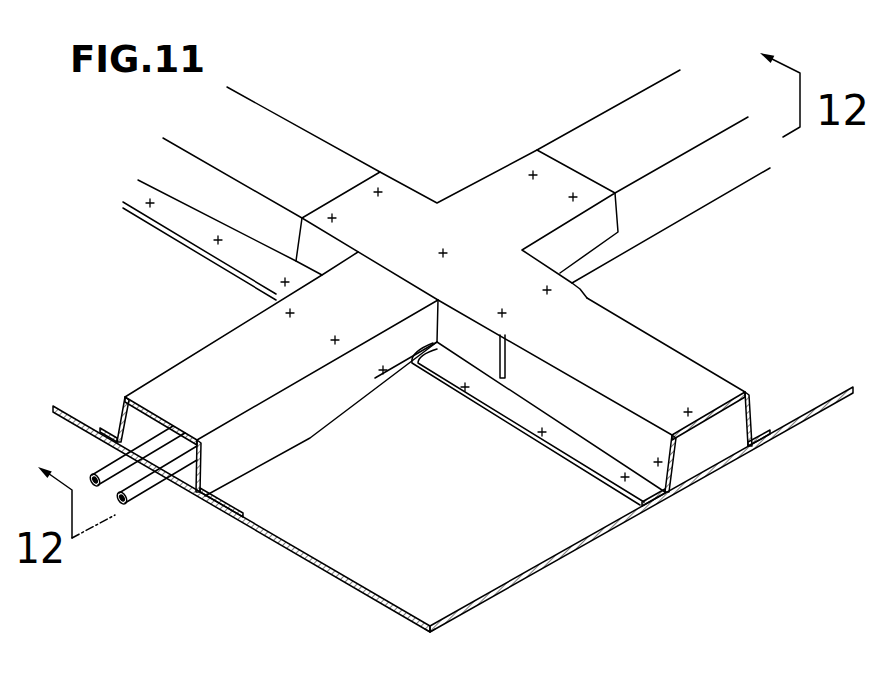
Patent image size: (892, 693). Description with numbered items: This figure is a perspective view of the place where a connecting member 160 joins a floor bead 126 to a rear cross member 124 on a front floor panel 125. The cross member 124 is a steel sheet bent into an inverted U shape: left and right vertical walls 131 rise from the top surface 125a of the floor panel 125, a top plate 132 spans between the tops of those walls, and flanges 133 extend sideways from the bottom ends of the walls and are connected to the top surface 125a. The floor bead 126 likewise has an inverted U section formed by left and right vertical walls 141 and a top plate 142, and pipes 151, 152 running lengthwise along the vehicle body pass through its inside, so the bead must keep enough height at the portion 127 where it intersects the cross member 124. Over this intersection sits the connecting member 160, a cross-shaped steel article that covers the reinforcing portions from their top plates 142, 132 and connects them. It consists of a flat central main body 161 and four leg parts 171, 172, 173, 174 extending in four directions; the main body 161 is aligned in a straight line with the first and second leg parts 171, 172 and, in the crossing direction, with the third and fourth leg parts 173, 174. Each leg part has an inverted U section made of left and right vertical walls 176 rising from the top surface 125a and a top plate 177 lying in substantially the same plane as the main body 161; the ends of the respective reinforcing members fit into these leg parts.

The rear cross member 124 is at (718, 368).
The front floor panel 125 is at (383, 573).
The top surface of front floor panel 125a is at (433, 583).
The floor bead 126 is at (197, 383).
The intersecting portion 127 is at (593, 285).
The vertical wall of cross member 131 is at (688, 492).
The top plate of cross member 132 is at (700, 427).
The flange of cross member 133 is at (633, 518).
The vertical wall of floor bead 141 is at (114, 430).
The top plate of floor bead 142 is at (161, 405).
The pipe 151 is at (105, 469).
The pipe 152 is at (143, 495).
The connecting member 160 is at (593, 57).
The main body of connecting member 161 is at (420, 262).
The first leg part 171 is at (395, 208).
The second leg part 172 is at (495, 277).
The third leg part 173 is at (343, 297).
The fourth leg part 174 is at (548, 197).
The vertical wall of leg part 176 is at (380, 366).
The top plate of leg part 177 is at (547, 323).